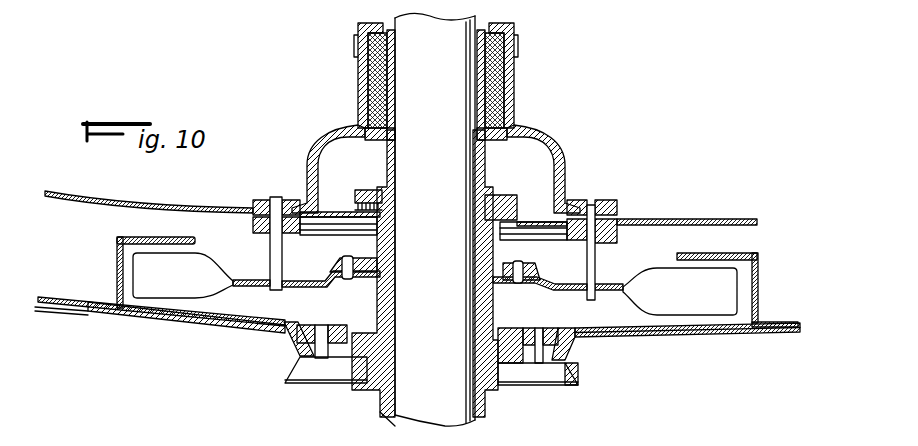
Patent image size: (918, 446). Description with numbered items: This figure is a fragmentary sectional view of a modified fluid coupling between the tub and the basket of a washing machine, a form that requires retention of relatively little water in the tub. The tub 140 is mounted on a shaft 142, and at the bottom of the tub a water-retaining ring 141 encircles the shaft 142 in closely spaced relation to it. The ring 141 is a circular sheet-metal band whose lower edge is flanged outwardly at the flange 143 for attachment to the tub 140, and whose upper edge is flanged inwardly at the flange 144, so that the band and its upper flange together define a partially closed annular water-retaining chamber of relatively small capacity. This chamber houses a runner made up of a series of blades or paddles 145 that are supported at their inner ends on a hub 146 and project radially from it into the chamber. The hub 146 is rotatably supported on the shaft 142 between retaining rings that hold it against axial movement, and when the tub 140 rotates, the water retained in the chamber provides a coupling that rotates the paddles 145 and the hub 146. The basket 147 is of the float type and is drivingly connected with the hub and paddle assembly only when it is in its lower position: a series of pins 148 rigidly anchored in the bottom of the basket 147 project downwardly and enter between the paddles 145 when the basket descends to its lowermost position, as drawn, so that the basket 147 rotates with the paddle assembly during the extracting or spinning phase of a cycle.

The tub 140 is at (45, 297).
The water-retaining ring 141 is at (117, 250).
The shaft 142 is at (380, 302).
The lower outward flange 143 is at (107, 304).
The upper inward flange 144 is at (178, 237).
The blades or paddles 145 is at (197, 262).
The hub 146 is at (366, 254).
The basket 147 is at (82, 199).
The pins 148 is at (275, 290).